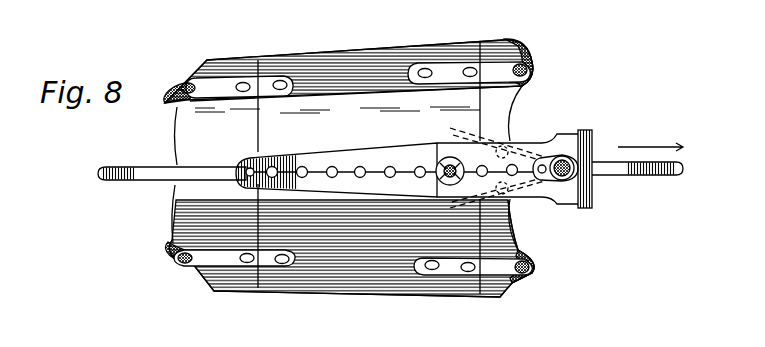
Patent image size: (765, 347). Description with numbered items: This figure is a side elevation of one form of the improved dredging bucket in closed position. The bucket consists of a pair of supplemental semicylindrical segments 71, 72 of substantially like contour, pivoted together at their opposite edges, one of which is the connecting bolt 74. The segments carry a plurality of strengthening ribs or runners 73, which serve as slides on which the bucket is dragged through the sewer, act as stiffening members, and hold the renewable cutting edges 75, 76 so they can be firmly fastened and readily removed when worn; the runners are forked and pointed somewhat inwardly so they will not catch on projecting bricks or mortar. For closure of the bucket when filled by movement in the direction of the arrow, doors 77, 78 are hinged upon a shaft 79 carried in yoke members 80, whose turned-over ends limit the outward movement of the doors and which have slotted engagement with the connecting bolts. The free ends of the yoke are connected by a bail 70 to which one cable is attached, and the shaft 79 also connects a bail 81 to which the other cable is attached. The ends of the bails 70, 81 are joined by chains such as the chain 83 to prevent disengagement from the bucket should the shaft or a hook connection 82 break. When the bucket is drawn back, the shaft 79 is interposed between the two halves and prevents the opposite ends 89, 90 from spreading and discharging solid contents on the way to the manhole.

The bail 70 is at (150, 181).
The semicylindrical segment 71 is at (338, 57).
The semicylindrical segment 72 is at (348, 290).
The strengthening ribs or runners 73 is at (217, 90).
The connecting bolt 74 is at (443, 183).
The cutting edge 75 is at (224, 60).
The cutting edge 76 is at (494, 45).
The door 77 is at (500, 132).
The door 78 is at (510, 203).
The shaft 79 is at (566, 161).
The yoke members 80 is at (578, 205).
The bail 81 is at (628, 176).
The hook connection 82 is at (246, 168).
The chain 83 is at (377, 168).
The end of bucket segment 89 is at (178, 143).
The end of bucket segment 90 is at (183, 192).